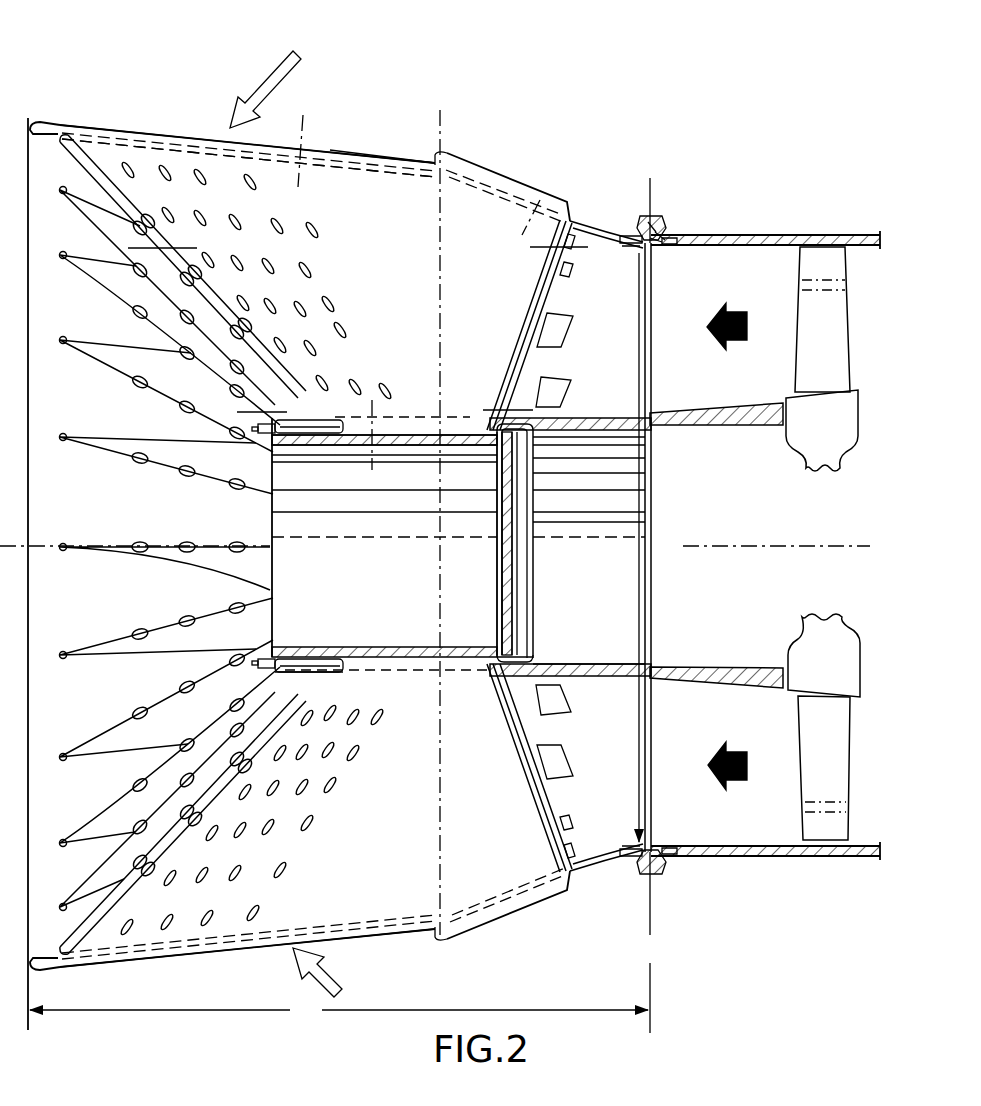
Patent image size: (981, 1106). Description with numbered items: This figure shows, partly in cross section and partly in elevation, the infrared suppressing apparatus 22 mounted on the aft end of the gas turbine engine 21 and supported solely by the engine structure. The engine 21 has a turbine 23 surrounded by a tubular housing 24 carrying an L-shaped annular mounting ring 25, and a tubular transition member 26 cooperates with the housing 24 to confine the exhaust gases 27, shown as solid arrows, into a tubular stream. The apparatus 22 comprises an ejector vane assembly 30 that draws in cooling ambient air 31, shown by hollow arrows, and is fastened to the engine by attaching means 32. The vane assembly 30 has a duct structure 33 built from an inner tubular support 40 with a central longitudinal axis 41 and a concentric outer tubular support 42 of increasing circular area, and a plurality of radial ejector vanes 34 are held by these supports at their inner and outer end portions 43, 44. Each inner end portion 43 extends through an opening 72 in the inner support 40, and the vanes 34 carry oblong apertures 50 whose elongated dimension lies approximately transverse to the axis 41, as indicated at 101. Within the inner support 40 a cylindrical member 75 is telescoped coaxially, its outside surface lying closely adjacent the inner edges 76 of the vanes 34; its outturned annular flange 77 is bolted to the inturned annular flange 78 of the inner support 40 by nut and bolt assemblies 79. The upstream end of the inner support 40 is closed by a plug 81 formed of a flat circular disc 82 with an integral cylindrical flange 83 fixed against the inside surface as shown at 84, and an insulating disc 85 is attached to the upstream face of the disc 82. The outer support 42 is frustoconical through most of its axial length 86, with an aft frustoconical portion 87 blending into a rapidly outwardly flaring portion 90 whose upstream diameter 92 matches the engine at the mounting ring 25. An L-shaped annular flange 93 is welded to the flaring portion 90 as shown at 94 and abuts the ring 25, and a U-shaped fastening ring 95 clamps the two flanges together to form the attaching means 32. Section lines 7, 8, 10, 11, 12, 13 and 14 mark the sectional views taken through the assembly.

The section line 7- 7 is at (457, 110).
The section line 8- 8 is at (622, 173).
The section line 10- 10 is at (128, 233).
The section line 11- 11 is at (237, 428).
The section line 12- 12 is at (523, 157).
The section line 13- 13 is at (283, 110).
The section line 14- 14 is at (353, 402).
The gas turbine engine 21 is at (818, 238).
The apparatus 22 is at (128, 72).
The turbine 23 is at (838, 345).
The tubular housing 24 is at (775, 858).
The annular mounting ring 25 is at (658, 240).
The tubular transition member 26 is at (722, 404).
The exhaust gases 27 is at (740, 305).
The ejector vane assembly 30 is at (470, 157).
The cooling ambient air 31 is at (280, 72).
The attaching means 32 is at (630, 222).
The duct structure 33 is at (335, 150).
The radial ejector vanes 34 is at (360, 270).
The inner tubular support 40 is at (590, 418).
The central longitudinal axis 41 is at (810, 546).
The outer tubular support 42 is at (58, 120).
The inner end portion 43 is at (420, 475).
The outer end portion 44 is at (178, 128).
The apertures 50 is at (348, 332).
The opening 72 is at (458, 462).
The cylindrical member 75 is at (302, 655).
The inner edges 76 is at (345, 442).
The outturned annular flange 77 is at (280, 672).
The inturned annular flange 78 is at (322, 664).
The nut and bolt assemblies 79 is at (265, 662).
The upstream plug 81 is at (493, 562).
The flat circular disc 82 is at (520, 540).
The cylindrical flange 83 is at (525, 655).
The fixing location 84 is at (540, 668).
The insulating disc 85 is at (522, 598).
The axial length 86 is at (339, 1011).
The frustoconical portion 87 is at (268, 948).
The outwardly flaring portion 90 is at (592, 863).
The upstream diameter 92 is at (629, 547).
The annular flange 93 is at (656, 222).
The weld location 94 is at (628, 253).
The fastening ring 95 is at (660, 232).
The elongated dimension orientation 101 is at (392, 718).